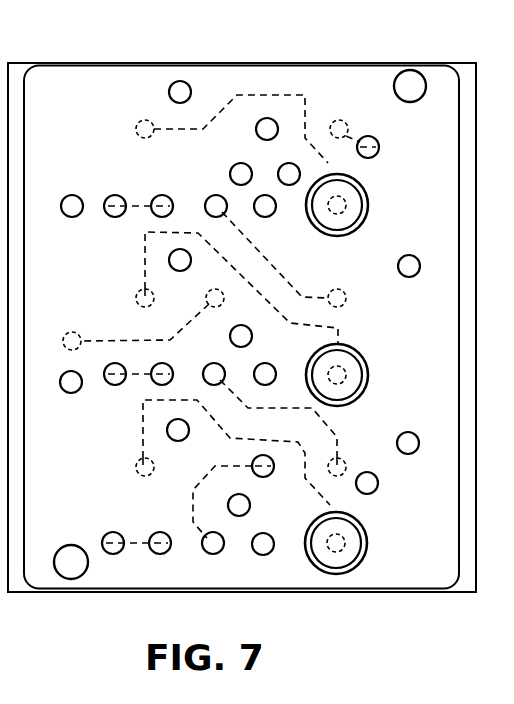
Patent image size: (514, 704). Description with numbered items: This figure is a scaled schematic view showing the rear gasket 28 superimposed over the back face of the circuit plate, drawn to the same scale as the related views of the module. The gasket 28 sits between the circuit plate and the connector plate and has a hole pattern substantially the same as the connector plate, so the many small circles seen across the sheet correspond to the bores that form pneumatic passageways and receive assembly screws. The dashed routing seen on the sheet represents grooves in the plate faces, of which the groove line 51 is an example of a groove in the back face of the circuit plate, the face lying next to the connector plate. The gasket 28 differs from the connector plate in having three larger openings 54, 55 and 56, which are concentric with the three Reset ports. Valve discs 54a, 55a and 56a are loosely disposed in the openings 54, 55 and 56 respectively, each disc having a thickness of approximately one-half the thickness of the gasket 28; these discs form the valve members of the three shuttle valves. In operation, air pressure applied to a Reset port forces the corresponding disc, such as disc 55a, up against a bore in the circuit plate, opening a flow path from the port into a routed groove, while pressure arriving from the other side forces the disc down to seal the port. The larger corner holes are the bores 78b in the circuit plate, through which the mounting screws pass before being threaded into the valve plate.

The gasket 28 is at (357, 80).
The groove line 51 is at (262, 93).
The opening 54 is at (362, 192).
The valve disc 54a is at (337, 205).
The opening 55 is at (350, 372).
The valve disc 55a is at (337, 375).
The opening 56 is at (350, 540).
The valve disc 56a is at (336, 543).
The bores 78b is at (412, 80).